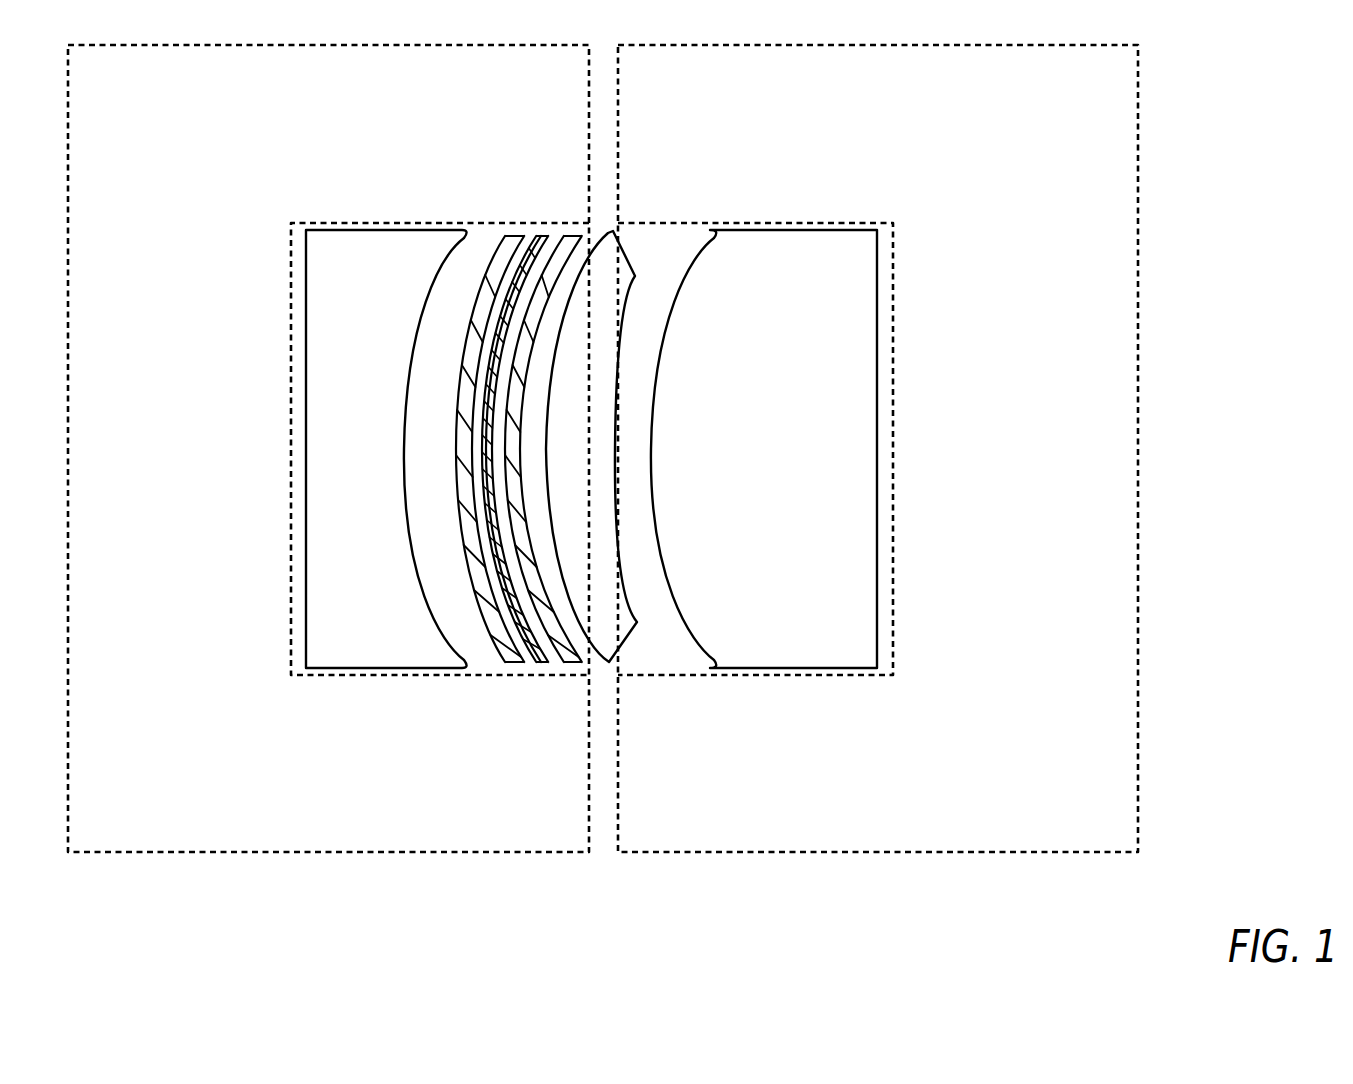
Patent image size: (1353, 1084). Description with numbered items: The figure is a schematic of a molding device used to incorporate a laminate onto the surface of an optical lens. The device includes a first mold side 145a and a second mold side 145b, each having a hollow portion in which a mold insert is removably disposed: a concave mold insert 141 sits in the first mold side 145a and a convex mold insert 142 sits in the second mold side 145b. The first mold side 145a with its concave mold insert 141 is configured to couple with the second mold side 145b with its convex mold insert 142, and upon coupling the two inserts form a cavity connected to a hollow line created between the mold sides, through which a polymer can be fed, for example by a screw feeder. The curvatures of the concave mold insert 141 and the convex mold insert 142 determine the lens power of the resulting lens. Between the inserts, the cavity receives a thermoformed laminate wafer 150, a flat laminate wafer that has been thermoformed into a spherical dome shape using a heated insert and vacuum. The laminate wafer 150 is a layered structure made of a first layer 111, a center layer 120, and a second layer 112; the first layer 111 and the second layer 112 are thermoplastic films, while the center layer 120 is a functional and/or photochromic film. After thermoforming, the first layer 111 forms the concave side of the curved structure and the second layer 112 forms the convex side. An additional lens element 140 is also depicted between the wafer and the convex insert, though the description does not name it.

The first layer 111 is at (553, 653).
The second layer 112 is at (477, 600).
The center layer 120 is at (523, 650).
The meniscus lens 140 is at (617, 625).
The concave mold insert 141 is at (322, 596).
The convex mold insert 142 is at (858, 615).
The first mold side 145a is at (318, 853).
The second mold side 145b is at (849, 853).
The thermoformed laminate wafer 150 is at (529, 483).